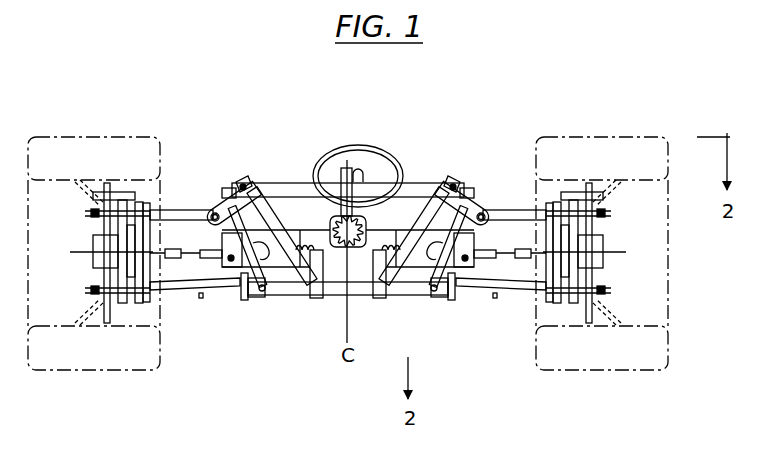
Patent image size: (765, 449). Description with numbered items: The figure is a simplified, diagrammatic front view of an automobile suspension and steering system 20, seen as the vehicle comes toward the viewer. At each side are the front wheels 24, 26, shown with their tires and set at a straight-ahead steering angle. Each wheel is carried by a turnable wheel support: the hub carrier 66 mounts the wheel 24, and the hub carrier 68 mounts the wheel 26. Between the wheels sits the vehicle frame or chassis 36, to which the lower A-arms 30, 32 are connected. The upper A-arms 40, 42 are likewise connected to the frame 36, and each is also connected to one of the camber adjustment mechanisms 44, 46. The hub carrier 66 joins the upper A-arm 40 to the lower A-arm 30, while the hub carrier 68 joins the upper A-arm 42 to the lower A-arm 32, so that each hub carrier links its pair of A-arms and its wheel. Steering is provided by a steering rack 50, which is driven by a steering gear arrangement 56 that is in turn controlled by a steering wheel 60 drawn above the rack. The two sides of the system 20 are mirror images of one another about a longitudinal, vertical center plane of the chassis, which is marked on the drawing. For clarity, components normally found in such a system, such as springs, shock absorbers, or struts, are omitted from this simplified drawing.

The automobile suspension and steering system 20 is at (529, 139).
The front wheel 24 is at (608, 371).
The front wheel 26 is at (106, 371).
The lower A-arm 30 is at (520, 296).
The lower A-arm 32 is at (175, 296).
The vehicle frame or chassis 36 is at (278, 297).
The upper A-arm 40 is at (498, 202).
The upper A-arm 42 is at (198, 202).
The camber adjustment mechanism 44 is at (462, 288).
The camber adjustment mechanism 46 is at (236, 290).
The steering rack 50 is at (308, 238).
The steering gear arrangement 56 is at (362, 290).
The steering wheel 60 is at (345, 137).
The hub carrier 66 is at (539, 231).
The hub carrier 68 is at (199, 207).